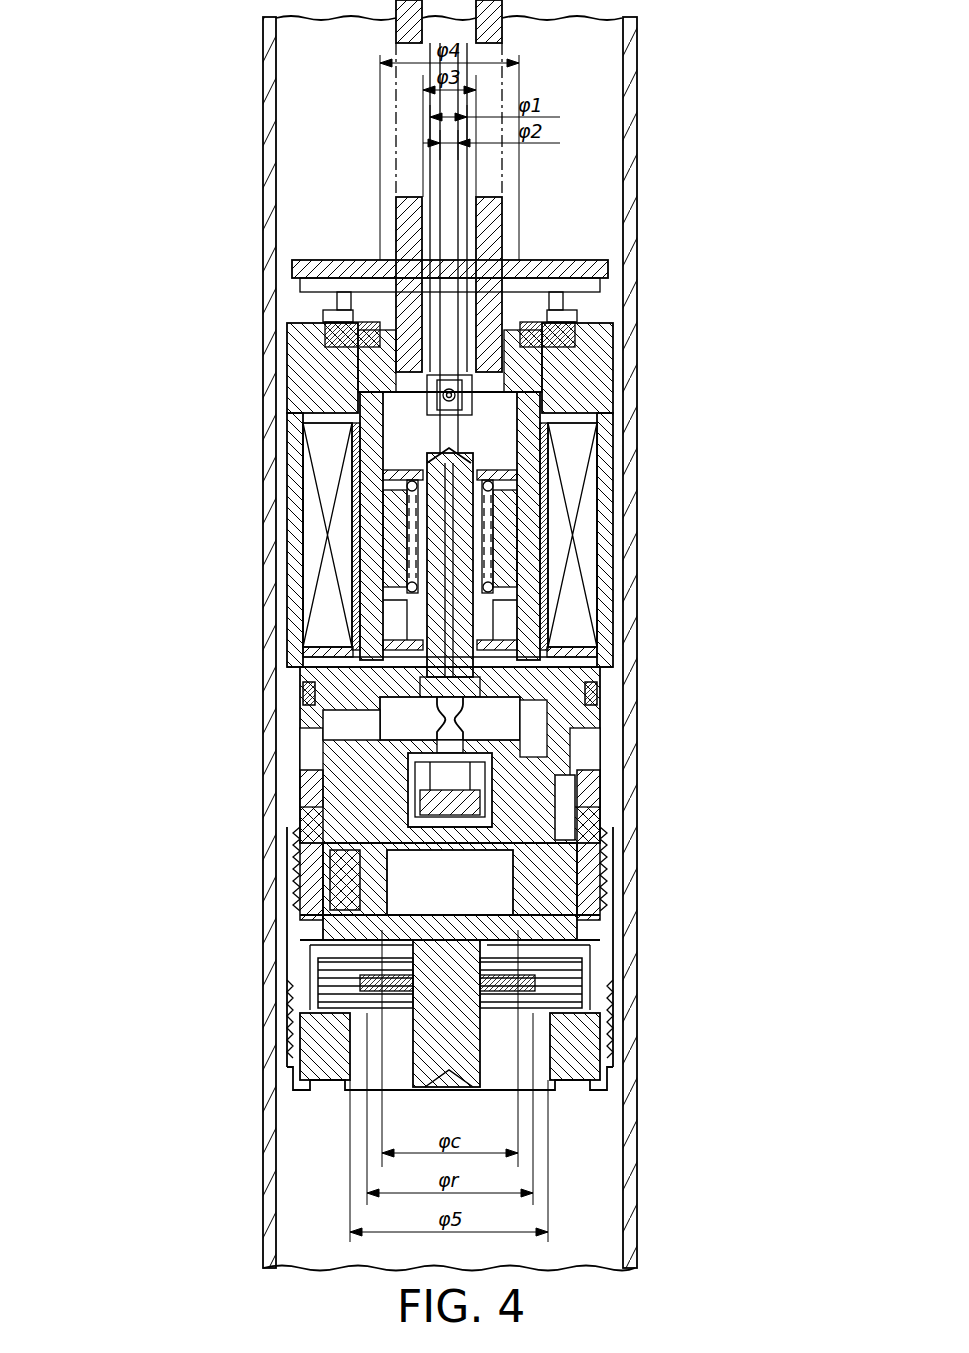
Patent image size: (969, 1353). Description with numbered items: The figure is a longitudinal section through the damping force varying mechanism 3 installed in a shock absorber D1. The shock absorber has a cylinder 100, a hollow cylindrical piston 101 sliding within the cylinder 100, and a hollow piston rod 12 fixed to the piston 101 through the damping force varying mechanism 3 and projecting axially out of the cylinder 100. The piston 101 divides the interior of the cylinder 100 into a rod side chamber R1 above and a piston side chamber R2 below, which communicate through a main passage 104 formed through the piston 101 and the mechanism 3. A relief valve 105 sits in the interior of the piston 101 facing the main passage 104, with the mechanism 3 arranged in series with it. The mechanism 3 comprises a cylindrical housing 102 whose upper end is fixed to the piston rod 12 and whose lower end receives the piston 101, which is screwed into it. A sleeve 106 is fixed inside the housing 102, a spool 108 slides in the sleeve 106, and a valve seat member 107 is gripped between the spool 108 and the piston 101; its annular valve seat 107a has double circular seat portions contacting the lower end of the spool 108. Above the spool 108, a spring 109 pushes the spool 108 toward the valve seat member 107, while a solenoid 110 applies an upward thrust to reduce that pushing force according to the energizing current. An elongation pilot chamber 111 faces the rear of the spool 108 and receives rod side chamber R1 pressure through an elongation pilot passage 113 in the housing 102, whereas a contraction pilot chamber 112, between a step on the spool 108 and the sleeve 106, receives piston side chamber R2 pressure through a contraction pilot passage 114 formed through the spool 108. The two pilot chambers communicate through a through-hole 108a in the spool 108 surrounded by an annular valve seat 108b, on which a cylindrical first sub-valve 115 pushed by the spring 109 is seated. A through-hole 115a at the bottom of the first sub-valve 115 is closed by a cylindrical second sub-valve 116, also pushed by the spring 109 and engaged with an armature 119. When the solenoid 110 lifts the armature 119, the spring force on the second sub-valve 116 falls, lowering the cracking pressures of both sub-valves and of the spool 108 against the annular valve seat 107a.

The cylinder 100 is at (630, 118).
The rod side chamber R1 is at (604, 196).
The piston side chamber R2 is at (597, 1157).
The shock absorber D1 is at (240, 156).
The piston rod 12 is at (398, 214).
The housing 102 is at (616, 360).
The elongation pilot passage 113 is at (560, 300).
The solenoid 110 is at (318, 545).
The second sub-valve 116 is at (356, 625).
The spring 109 is at (528, 497).
The armature 119 is at (496, 530).
The elongation pilot chamber 111 is at (505, 646).
The first sub-valve 115 is at (420, 672).
The through-hole 115a is at (470, 716).
The sleeve 106 is at (560, 672).
The through-hole 108a is at (305, 690).
The annular valve seat 108b is at (598, 694).
The contraction pilot chamber 112 is at (360, 722).
The spool 108 is at (440, 742).
The contraction pilot passage 114 is at (430, 778).
The damping force varying mechanism 3 is at (583, 803).
The main passage 104 is at (566, 837).
The valve seat member 107 is at (540, 915).
The annular valve seat 107a is at (325, 855).
The piston 101 is at (603, 990).
The relief valve 105 is at (320, 1030).